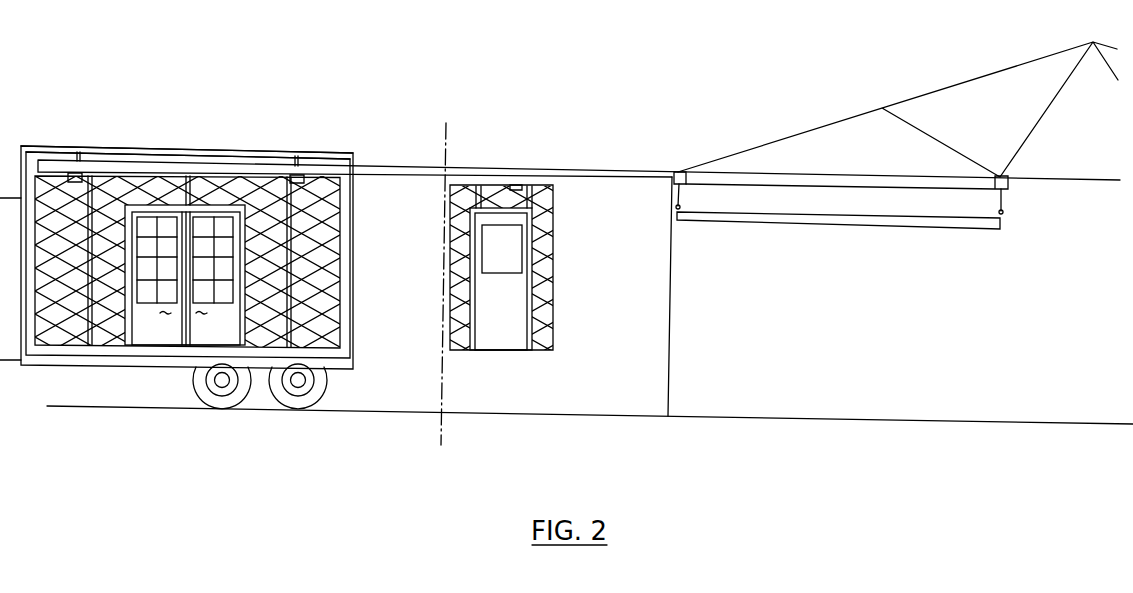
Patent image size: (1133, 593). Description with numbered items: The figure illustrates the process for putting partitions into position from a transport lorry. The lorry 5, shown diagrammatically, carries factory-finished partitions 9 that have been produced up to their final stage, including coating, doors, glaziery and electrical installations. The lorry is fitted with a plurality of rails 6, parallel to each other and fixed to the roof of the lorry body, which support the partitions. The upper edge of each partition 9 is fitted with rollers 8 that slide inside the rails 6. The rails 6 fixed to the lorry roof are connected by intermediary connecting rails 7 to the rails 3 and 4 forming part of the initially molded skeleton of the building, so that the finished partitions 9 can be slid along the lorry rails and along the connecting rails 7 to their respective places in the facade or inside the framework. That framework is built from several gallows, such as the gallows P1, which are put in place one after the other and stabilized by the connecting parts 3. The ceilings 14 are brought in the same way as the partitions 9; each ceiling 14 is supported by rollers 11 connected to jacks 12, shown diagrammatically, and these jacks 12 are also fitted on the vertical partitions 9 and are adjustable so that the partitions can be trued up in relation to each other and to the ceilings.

The connecting parts 3 is at (680, 172).
The rails 4 is at (760, 178).
The lorry 5 is at (218, 148).
The rails 6 is at (141, 163).
The connecting rails 7 is at (412, 167).
The rollers 8 is at (73, 175).
The partitions 9 is at (328, 200).
The rollers 11 is at (675, 180).
The jacks 12 is at (673, 198).
The ceilings 14 is at (822, 222).
The gallows P1 is at (668, 357).